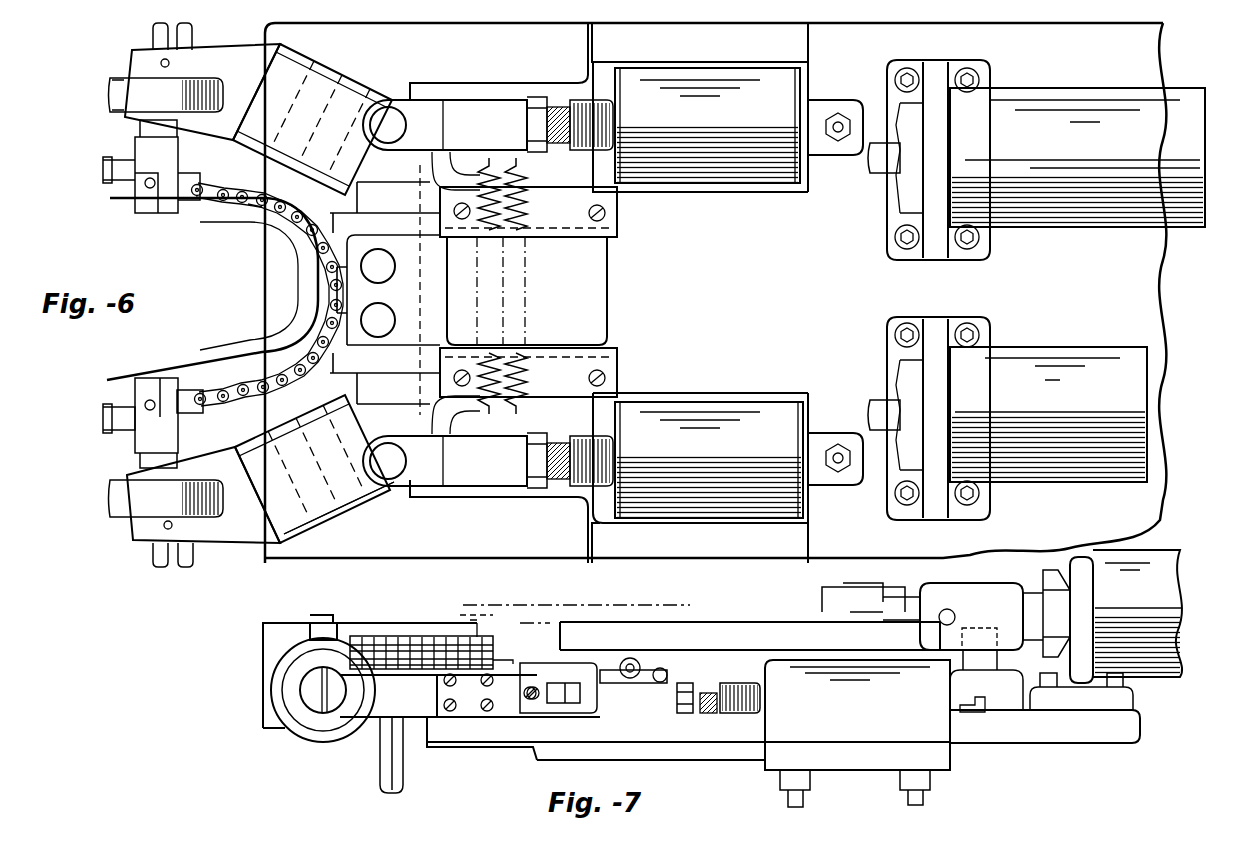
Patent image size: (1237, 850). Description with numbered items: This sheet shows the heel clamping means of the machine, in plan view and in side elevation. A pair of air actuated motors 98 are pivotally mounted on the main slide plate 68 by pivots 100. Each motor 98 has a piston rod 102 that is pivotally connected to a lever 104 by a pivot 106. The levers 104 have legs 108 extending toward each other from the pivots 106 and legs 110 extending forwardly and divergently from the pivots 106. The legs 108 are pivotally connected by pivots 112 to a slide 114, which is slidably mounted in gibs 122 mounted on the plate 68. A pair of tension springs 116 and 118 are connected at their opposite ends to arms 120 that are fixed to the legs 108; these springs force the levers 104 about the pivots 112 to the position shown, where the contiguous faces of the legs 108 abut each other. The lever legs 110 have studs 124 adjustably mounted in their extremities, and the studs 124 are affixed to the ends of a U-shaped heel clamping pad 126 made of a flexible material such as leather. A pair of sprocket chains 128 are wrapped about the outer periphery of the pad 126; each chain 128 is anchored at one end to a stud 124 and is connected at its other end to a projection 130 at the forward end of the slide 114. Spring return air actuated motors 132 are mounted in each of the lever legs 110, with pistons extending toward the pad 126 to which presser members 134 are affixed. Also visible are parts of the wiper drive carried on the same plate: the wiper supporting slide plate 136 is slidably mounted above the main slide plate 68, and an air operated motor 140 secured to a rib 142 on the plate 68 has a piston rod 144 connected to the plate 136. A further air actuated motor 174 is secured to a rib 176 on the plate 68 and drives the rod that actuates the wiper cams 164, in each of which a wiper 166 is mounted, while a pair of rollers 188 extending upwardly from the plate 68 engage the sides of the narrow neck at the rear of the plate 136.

In FIG. 6, the plate 68 is at (772, 308).
In FIG. 7, the plate 68 is at (850, 740).
In FIG. 6, the air actuated motors 98 is at (700, 92).
In FIG. 7, the air actuated motors 98 is at (840, 700).
In FIG. 6, the pivots 100 is at (836, 446).
In FIG. 7, the pivots 100 is at (975, 700).
In FIG. 6, the piston rod 102 is at (470, 120).
In FIG. 6, the lever 104 is at (288, 68).
In FIG. 6, the pivot 106 is at (389, 110).
In FIG. 6, the legs 108 is at (440, 320).
In FIG. 6, the legs 110 is at (250, 537).
In FIG. 6, the pivots 112 is at (375, 262).
In FIG. 6, the slide 114 is at (590, 281).
In FIG. 6, the tension spring 116 is at (510, 365).
In FIG. 6, the tension spring 118 is at (522, 209).
In FIG. 6, the arms 120 is at (462, 418).
In FIG. 6, the gibs 122 is at (600, 232).
In FIG. 6, the studs 124 is at (140, 440).
In FIG. 6, the U-shaped heel clamping pad 126 is at (215, 372).
In FIG. 7, the U-shaped heel clamping pad 126 is at (280, 637).
In FIG. 6, the sprocket chains 128 is at (222, 186).
In FIG. 7, the sprocket chains 128 is at (374, 636).
In FIG. 6, the projection 130 is at (316, 296).
In FIG. 6, the spring return air actuated motors 132 is at (322, 526).
In FIG. 6, the presser members 134 is at (288, 200).
In FIG. 7, the wiper supporting slide plate 136 is at (725, 634).
In FIG. 6, the air operated motor 140 is at (1058, 470).
In FIG. 7, the air operated motor 140 is at (1162, 582).
In FIG. 6, the rib 142 is at (945, 335).
In FIG. 7, the rib 142 is at (1080, 640).
In FIG. 7, the piston rod 144 is at (1003, 596).
In FIG. 7, the wiper cams 164 is at (530, 610).
In FIG. 7, the wiper 166 is at (462, 614).
In FIG. 6, the air actuated motor 174 is at (1078, 110).
In FIG. 6, the rib 176 is at (945, 85).
In FIG. 7, the rollers 188 is at (985, 626).